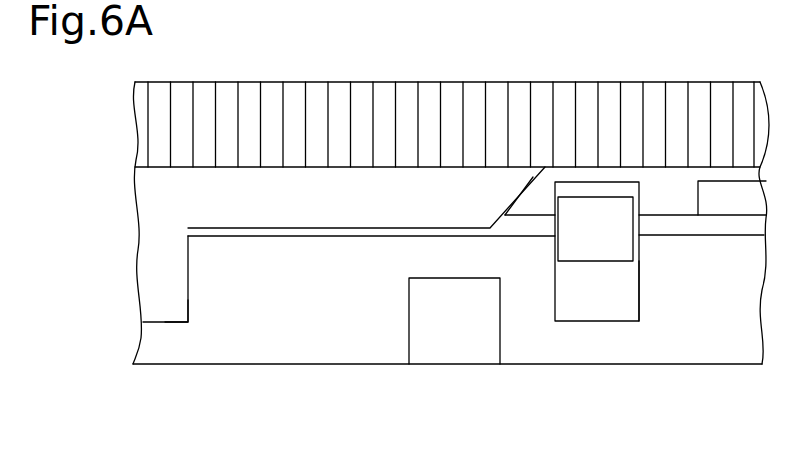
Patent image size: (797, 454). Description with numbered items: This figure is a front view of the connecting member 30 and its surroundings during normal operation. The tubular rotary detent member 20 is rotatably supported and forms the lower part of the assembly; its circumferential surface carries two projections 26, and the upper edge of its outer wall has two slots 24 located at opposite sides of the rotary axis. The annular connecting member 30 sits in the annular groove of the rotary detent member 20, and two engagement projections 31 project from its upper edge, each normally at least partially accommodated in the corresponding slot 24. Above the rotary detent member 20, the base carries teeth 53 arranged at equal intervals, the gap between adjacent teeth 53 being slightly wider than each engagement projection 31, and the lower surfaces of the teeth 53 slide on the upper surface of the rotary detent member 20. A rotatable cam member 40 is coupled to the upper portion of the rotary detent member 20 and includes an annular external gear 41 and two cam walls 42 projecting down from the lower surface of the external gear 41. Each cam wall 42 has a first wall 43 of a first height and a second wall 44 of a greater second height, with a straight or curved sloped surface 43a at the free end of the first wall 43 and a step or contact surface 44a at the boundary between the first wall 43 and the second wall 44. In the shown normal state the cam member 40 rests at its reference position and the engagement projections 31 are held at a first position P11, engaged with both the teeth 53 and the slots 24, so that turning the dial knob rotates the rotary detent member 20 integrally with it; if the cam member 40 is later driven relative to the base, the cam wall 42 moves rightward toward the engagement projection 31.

The rotary detent member 20 is at (692, 364).
The slot 24 is at (641, 308).
The projection 26 is at (455, 350).
The connecting member 30 is at (607, 313).
The engagement projection 31 is at (593, 255).
The cam member 40 is at (447, 90).
The external gear 41 is at (315, 89).
The cam wall 42 is at (355, 180).
The first wall 43 is at (298, 222).
The sloped surface 43a is at (523, 186).
The second wall 44 is at (167, 310).
The contact surface 44a is at (191, 306).
The teeth 53 is at (531, 204).
The first position P11 is at (608, 210).